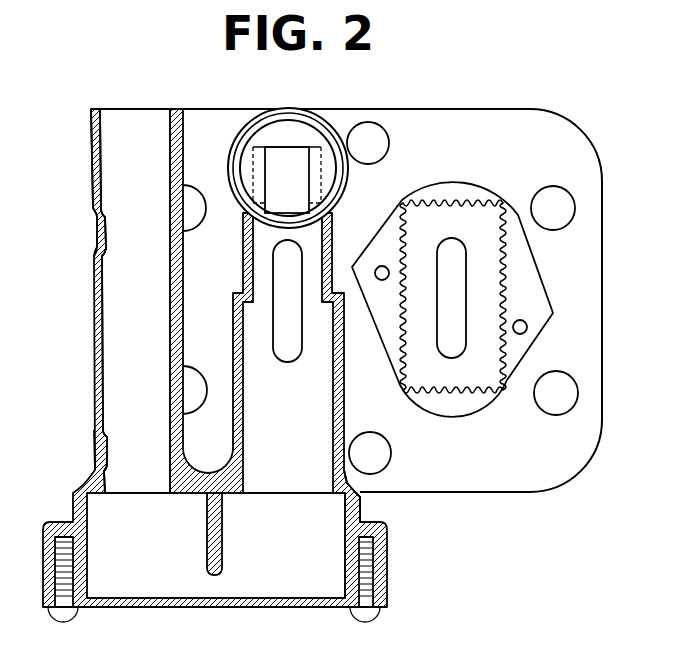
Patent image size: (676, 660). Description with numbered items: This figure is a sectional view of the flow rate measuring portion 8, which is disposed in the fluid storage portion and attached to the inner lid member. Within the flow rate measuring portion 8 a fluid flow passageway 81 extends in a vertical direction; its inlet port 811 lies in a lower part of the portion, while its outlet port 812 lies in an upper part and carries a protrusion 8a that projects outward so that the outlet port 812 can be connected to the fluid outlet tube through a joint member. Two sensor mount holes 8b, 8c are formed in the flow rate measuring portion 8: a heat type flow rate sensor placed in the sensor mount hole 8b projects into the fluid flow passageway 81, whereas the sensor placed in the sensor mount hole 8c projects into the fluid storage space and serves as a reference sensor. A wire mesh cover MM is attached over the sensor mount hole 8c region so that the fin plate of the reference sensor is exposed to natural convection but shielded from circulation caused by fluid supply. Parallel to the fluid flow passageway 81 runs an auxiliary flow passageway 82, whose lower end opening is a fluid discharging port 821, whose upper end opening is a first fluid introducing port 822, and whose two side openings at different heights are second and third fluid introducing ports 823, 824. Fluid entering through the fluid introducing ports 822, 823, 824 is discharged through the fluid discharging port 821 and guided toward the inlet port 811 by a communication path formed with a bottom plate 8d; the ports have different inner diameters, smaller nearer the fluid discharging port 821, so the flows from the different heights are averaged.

The flow rate measuring portion 8 is at (405, 109).
The protrusion 8a is at (242, 128).
The sensor mount hole 8b is at (288, 272).
The sensor mount hole 8c is at (455, 263).
The bottom plate 8d is at (263, 603).
The fluid flow passageway 81 is at (318, 417).
The inlet port 811 is at (323, 563).
The outlet port 812 is at (295, 162).
The auxiliary flow passageway 82 is at (95, 343).
The fluid discharging port 821 is at (152, 568).
The first fluid introducing port 822 is at (129, 122).
The second fluid introducing port 823 is at (96, 228).
The third fluid introducing port 824 is at (96, 450).
The wire mesh cover MM is at (458, 390).